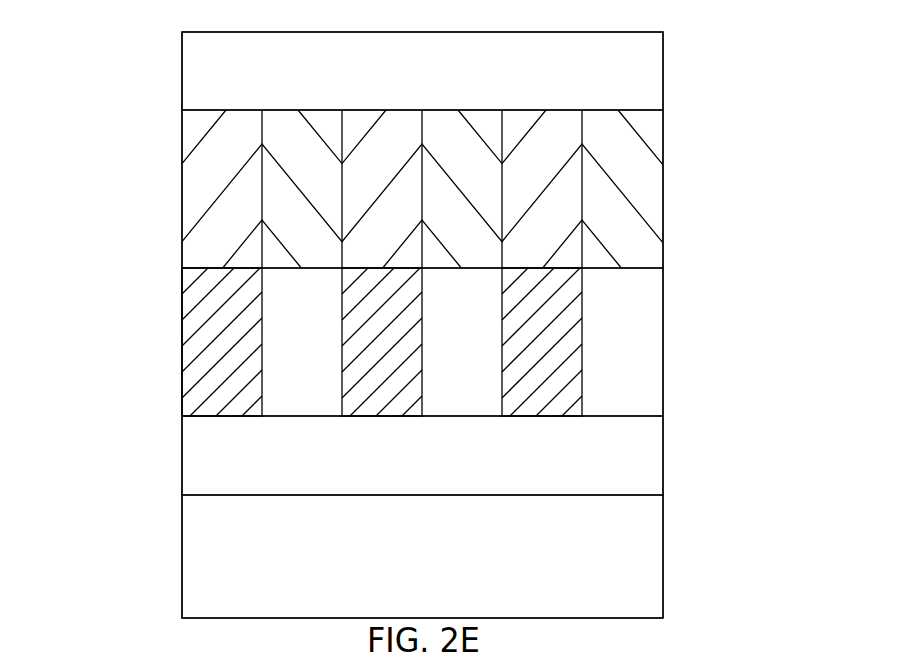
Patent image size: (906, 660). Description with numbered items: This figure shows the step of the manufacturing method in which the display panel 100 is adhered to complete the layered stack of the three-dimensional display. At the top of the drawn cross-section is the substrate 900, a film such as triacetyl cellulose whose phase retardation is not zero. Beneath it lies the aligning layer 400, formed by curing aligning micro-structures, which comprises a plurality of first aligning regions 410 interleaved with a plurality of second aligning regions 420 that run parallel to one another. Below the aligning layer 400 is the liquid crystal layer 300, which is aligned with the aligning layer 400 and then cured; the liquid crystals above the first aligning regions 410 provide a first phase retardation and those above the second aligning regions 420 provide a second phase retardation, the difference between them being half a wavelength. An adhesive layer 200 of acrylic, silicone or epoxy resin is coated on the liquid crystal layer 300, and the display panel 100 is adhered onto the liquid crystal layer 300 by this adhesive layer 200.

The display panel 100 is at (663, 557).
The adhesive layer 200 is at (663, 453).
The liquid crystal layer 300 is at (663, 343).
The aligning layer 400 is at (425, 194).
The first aligning regions 410 is at (193, 198).
The second aligning regions 420 is at (277, 207).
The substrate 900 is at (663, 83).